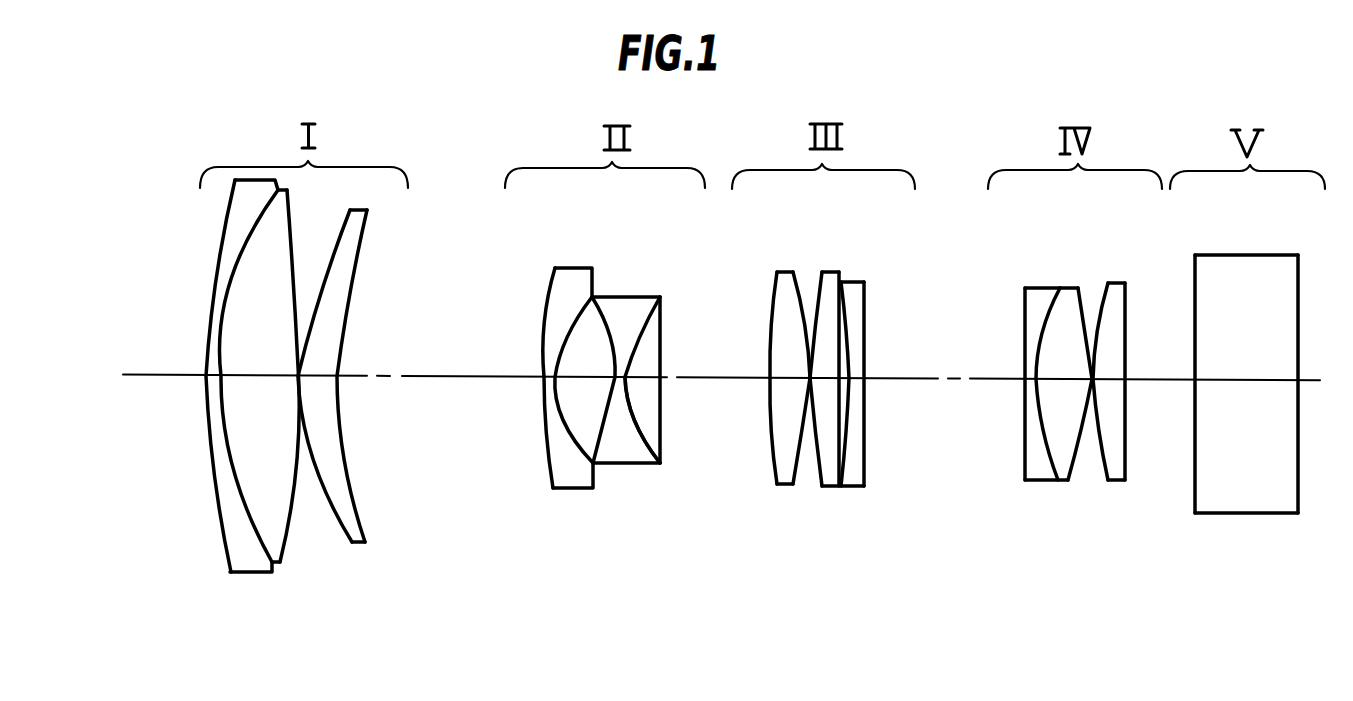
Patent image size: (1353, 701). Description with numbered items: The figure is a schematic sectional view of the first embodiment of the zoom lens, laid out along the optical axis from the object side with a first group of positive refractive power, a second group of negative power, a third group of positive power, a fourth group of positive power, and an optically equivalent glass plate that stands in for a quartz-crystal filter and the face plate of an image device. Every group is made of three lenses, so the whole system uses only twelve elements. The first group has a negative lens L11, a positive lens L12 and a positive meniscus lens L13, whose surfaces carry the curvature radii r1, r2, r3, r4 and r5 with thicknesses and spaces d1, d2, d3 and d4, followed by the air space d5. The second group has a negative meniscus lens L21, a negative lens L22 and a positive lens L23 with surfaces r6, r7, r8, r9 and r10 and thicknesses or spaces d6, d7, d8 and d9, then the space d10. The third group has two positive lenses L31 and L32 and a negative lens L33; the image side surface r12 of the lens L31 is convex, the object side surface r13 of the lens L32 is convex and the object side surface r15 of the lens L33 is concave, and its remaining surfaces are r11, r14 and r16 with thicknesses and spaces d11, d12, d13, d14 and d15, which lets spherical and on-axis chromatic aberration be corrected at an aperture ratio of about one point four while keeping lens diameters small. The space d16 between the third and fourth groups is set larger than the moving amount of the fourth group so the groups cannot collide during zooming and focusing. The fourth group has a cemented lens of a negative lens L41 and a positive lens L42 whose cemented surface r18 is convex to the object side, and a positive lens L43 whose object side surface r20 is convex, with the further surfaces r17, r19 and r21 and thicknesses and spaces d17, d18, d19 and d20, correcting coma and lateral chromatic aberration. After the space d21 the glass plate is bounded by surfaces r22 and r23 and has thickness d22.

The curvature radius of first surface r1 is at (228, 497).
The curvature radius of second surface r2 is at (258, 512).
The curvature radius of third surface r3 is at (282, 503).
The curvature radius of fourth surface r4 is at (333, 517).
The curvature radius of fifth surface r5 is at (358, 547).
The curvature radius of sixth surface r6 is at (548, 445).
The curvature radius of seventh surface r7 is at (573, 450).
The curvature radius of eighth surface r8 is at (590, 490).
The curvature radius of ninth surface r9 is at (628, 465).
The curvature radius of tenth surface r10 is at (650, 418).
The curvature radius of eleventh surface r11 is at (770, 430).
The image side surface of first lens of third group r12 is at (785, 470).
The object side surface of second lens of third group r13 is at (818, 480).
The curvature radius of fourteenth surface r14 is at (835, 487).
The object side surface of third lens of third group r15 is at (843, 465).
The curvature radius of sixteenth surface r16 is at (866, 447).
The curvature radius of seventeenth surface r17 is at (1025, 430).
The cemented surface r18 is at (1028, 477).
The curvature radius of nineteenth surface r19 is at (1082, 432).
The object side surface of positive lens L43 r20 is at (1107, 478).
The curvature radius of twenty-first surface r21 is at (1125, 482).
The curvature radius of twenty-second surface r22 is at (1196, 483).
The curvature radius of twenty-third surface r23 is at (1297, 512).
The lens thickness d1 is at (210, 376).
The lens thickness or air space d2 is at (252, 376).
The lens thickness or air space d3 is at (297, 372).
The lens thickness or air space d4 is at (323, 376).
The air space d5 is at (430, 376).
The lens thickness d6 is at (553, 377).
The air space d7 is at (580, 377).
The lens thickness d8 is at (623, 377).
The lens thickness d9 is at (660, 377).
The air space d10 is at (715, 377).
The lens thickness d11 is at (792, 378).
The air space d12 is at (810, 378).
The lens thickness d13 is at (838, 378).
The air space d14 is at (858, 378).
The lens thickness d15 is at (863, 378).
The space between third and fourth groups d16 is at (942, 379).
The lens thickness d17 is at (1028, 379).
The lens thickness d18 is at (1065, 379).
The air space d19 is at (1093, 379).
The lens thickness d20 is at (1110, 379).
The air space d21 is at (1152, 380).
The glass plate thickness d22 is at (1218, 380).
The negative lens L11 is at (188, 410).
The positive lens L12 is at (249, 437).
The positive meniscus lens L13 is at (335, 432).
The negative meniscus lens L21 is at (525, 445).
The negative lens L22 is at (609, 458).
The positive lens L23 is at (664, 446).
The positive lens L31 is at (759, 434).
The positive lens L32 is at (808, 459).
The negative lens L33 is at (900, 440).
The negative lens L41 is at (1013, 437).
The positive lens L42 is at (1057, 446).
The positive lens L43 is at (1130, 459).